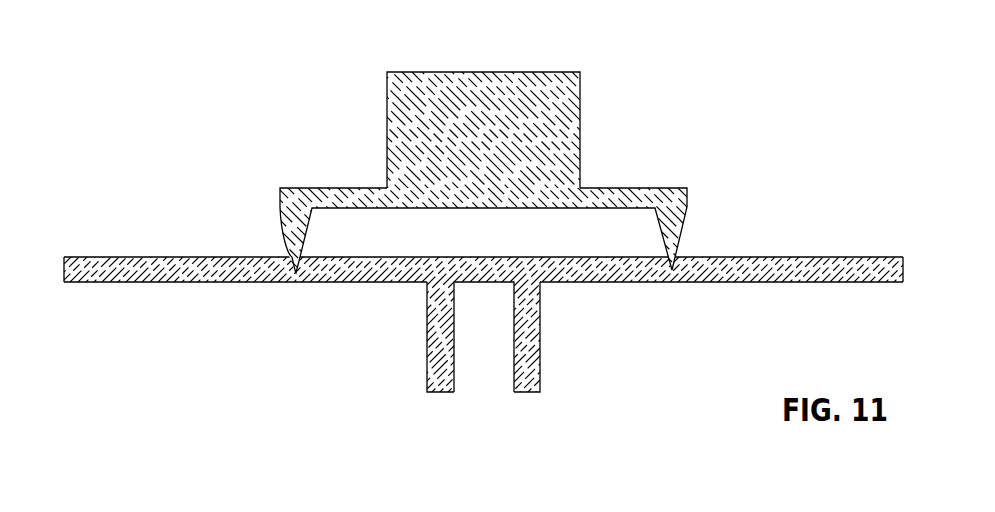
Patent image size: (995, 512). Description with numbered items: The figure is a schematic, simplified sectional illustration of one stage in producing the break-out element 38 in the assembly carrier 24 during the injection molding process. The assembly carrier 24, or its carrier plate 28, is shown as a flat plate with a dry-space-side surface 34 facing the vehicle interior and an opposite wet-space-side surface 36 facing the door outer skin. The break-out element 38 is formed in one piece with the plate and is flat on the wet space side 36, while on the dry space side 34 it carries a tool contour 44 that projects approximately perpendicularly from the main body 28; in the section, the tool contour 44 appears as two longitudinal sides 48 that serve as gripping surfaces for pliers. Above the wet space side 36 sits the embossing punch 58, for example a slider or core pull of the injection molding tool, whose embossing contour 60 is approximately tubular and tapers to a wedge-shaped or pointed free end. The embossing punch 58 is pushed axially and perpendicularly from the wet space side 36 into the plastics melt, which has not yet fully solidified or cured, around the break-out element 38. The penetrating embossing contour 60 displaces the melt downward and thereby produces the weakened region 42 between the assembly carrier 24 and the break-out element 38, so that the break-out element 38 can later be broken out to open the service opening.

The assembly carrier 24 is at (497, 284).
The carrier plate 28 is at (848, 268).
The dry-space-side surface 34 is at (771, 283).
The wet-space-side surface 36 is at (781, 257).
The break-out element 38 is at (651, 283).
The weakened region 42 is at (293, 283).
The tool contour 44 is at (481, 395).
The longitudinal sides 48 is at (440, 323).
The embossing punch 58 is at (406, 133).
The embossing contour 60 is at (686, 245).